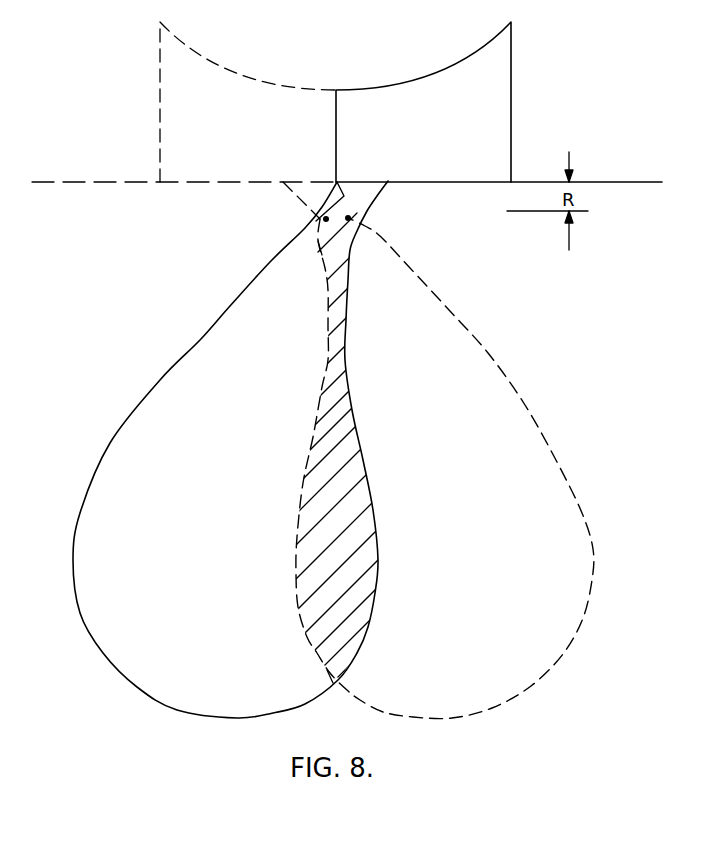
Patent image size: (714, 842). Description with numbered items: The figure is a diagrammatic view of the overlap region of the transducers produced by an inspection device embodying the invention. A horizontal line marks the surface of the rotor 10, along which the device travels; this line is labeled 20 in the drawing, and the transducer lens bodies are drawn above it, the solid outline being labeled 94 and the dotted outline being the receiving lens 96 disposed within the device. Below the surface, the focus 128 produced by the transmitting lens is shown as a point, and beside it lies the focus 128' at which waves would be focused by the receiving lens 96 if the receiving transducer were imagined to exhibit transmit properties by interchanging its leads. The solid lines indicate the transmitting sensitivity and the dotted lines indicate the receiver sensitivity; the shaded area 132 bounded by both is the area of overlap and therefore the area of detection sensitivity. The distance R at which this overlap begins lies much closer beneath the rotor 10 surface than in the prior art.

The rotor 10 is at (607, 293).
The throat plate surface 20 is at (606, 182).
The cam member 94 is at (511, 97).
The receiving lens 96 is at (160, 98).
The focus 128 is at (292, 216).
The focus 128' is at (388, 216).
The shaded area 132 is at (346, 392).